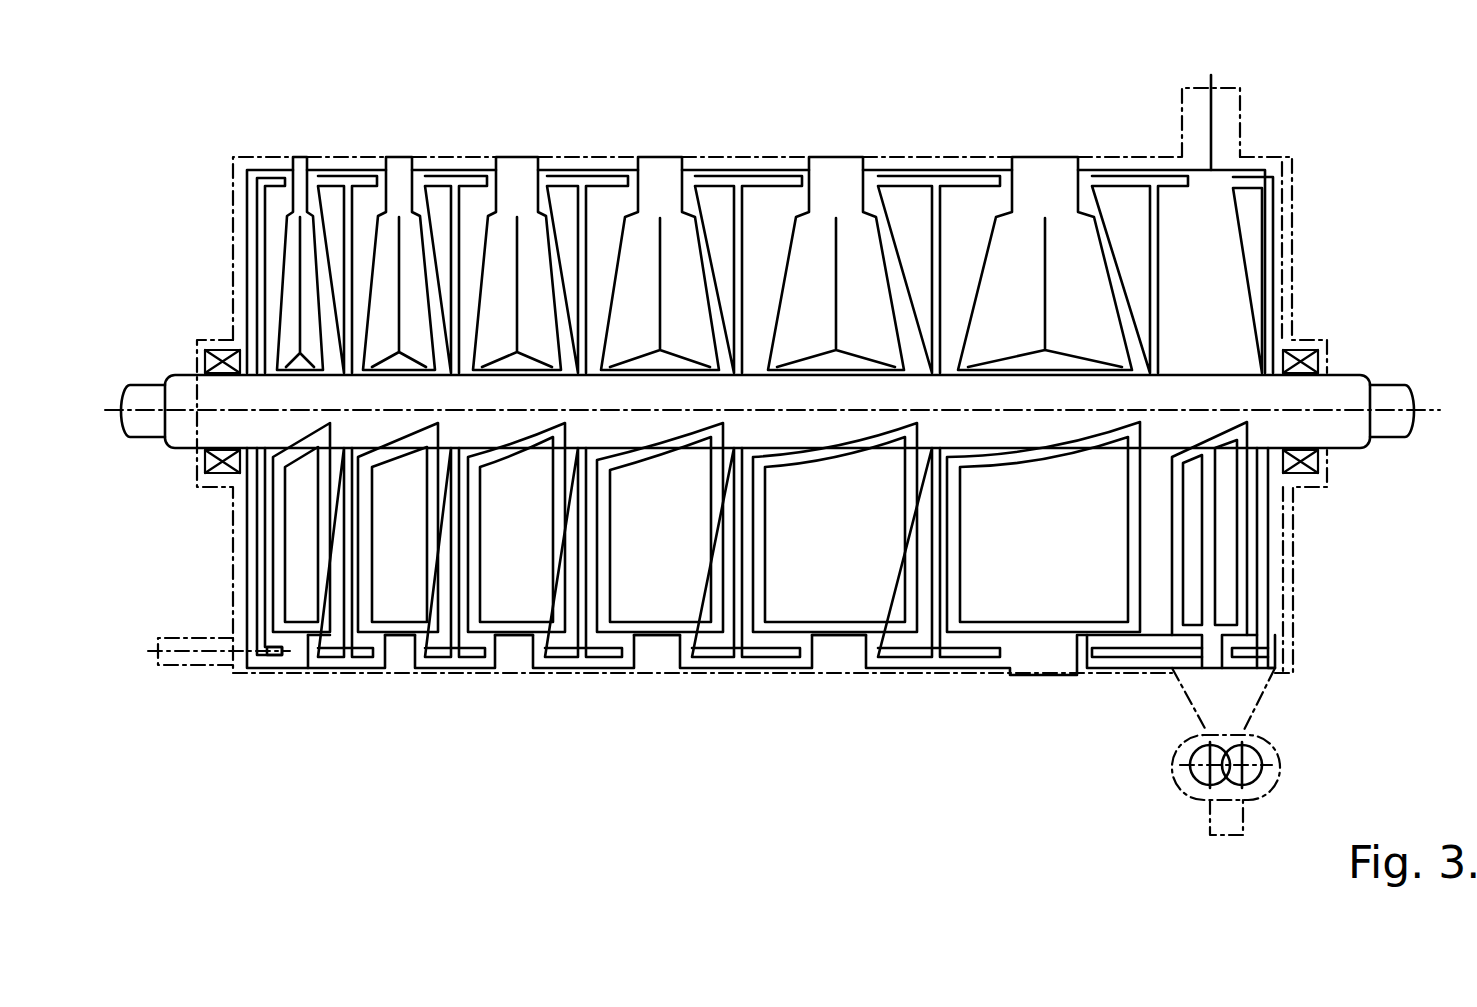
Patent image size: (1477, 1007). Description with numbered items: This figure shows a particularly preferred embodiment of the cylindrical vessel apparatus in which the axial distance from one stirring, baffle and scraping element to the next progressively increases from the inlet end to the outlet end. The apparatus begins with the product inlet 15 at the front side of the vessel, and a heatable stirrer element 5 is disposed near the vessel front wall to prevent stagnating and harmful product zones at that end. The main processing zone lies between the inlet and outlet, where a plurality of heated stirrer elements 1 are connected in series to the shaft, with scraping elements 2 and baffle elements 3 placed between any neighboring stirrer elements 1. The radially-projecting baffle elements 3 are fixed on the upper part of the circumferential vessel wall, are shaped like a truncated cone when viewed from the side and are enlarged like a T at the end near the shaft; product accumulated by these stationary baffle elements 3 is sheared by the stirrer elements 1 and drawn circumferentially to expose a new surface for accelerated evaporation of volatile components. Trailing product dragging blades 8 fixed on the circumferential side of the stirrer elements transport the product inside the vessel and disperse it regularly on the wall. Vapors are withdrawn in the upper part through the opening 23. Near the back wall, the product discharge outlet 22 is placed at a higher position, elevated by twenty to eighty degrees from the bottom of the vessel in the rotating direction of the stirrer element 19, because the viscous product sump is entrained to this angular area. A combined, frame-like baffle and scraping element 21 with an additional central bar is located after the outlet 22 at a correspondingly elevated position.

The heated stirrer element 1 is at (452, 632).
The scraping element 2 is at (718, 545).
The baffle element 3 is at (812, 305).
The heatable stirrer element 5 is at (265, 658).
The product dragging blade 8 is at (478, 178).
The product inlet 15 is at (183, 645).
The stirrer element 19 is at (1267, 242).
The combined frame-like baffle- and scraping-element 21 is at (1238, 548).
The product discharge outlet 22 is at (1197, 683).
The opening 23 is at (1198, 122).